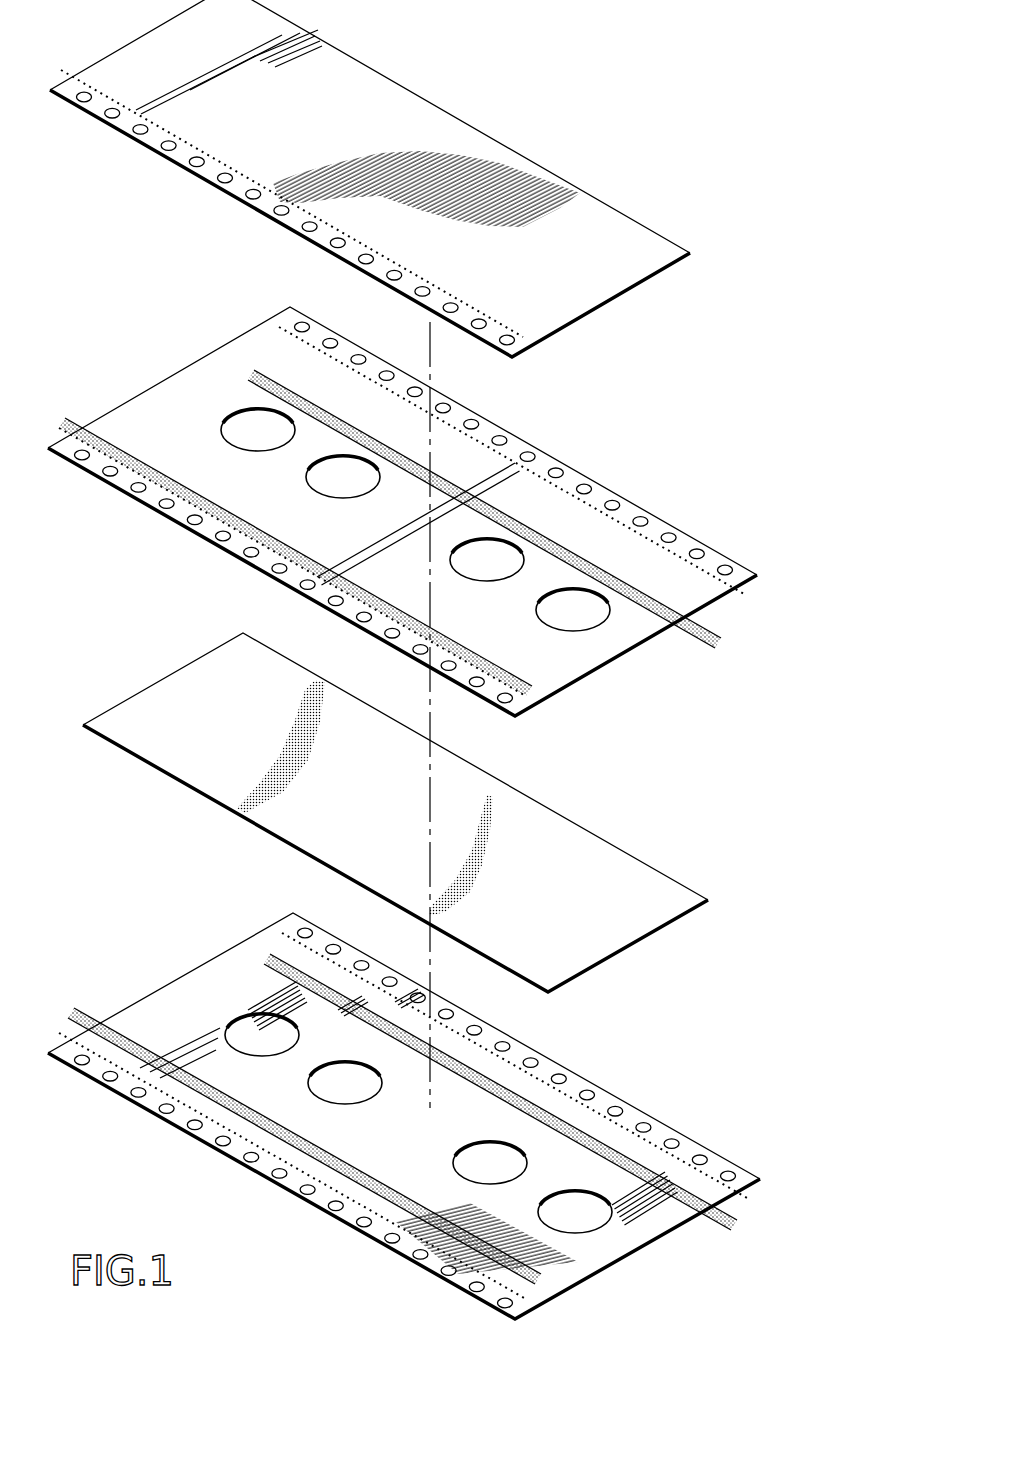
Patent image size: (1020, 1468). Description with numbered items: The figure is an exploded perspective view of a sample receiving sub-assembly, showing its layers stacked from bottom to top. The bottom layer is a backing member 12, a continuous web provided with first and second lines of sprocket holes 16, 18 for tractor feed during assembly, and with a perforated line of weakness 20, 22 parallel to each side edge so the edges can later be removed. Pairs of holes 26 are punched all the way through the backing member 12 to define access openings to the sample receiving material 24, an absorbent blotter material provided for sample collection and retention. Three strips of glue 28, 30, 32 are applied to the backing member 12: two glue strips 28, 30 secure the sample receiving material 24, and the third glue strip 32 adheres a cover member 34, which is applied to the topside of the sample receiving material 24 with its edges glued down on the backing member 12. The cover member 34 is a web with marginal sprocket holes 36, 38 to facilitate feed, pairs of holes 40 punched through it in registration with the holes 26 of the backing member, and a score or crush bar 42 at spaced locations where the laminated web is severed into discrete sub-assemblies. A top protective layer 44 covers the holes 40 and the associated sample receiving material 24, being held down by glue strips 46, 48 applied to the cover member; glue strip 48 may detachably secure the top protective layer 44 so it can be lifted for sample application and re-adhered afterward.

The backing member 12 is at (403, 1092).
The first line of sprocket holes 16 is at (323, 1145).
The second line of sprocket holes 18 is at (478, 1066).
The line of weakness 20 is at (92, 1045).
The line of weakness 22 is at (268, 935).
The sample receiving material 24 is at (413, 812).
The hole pairs 26 is at (323, 1022).
The glue strip 28 is at (560, 1294).
The glue strip 30 is at (707, 1217).
The glue strip 32 is at (738, 1196).
The cover member 34 is at (402, 510).
The marginal sprocket holes 36 is at (67, 447).
The marginal sprocket holes 38 is at (287, 305).
The pairs of holes 40 is at (285, 472).
The score or crush bar 42 is at (498, 480).
The top protective layer 44 is at (370, 178).
The glue strip 46 is at (546, 692).
The glue strip 48 is at (672, 618).